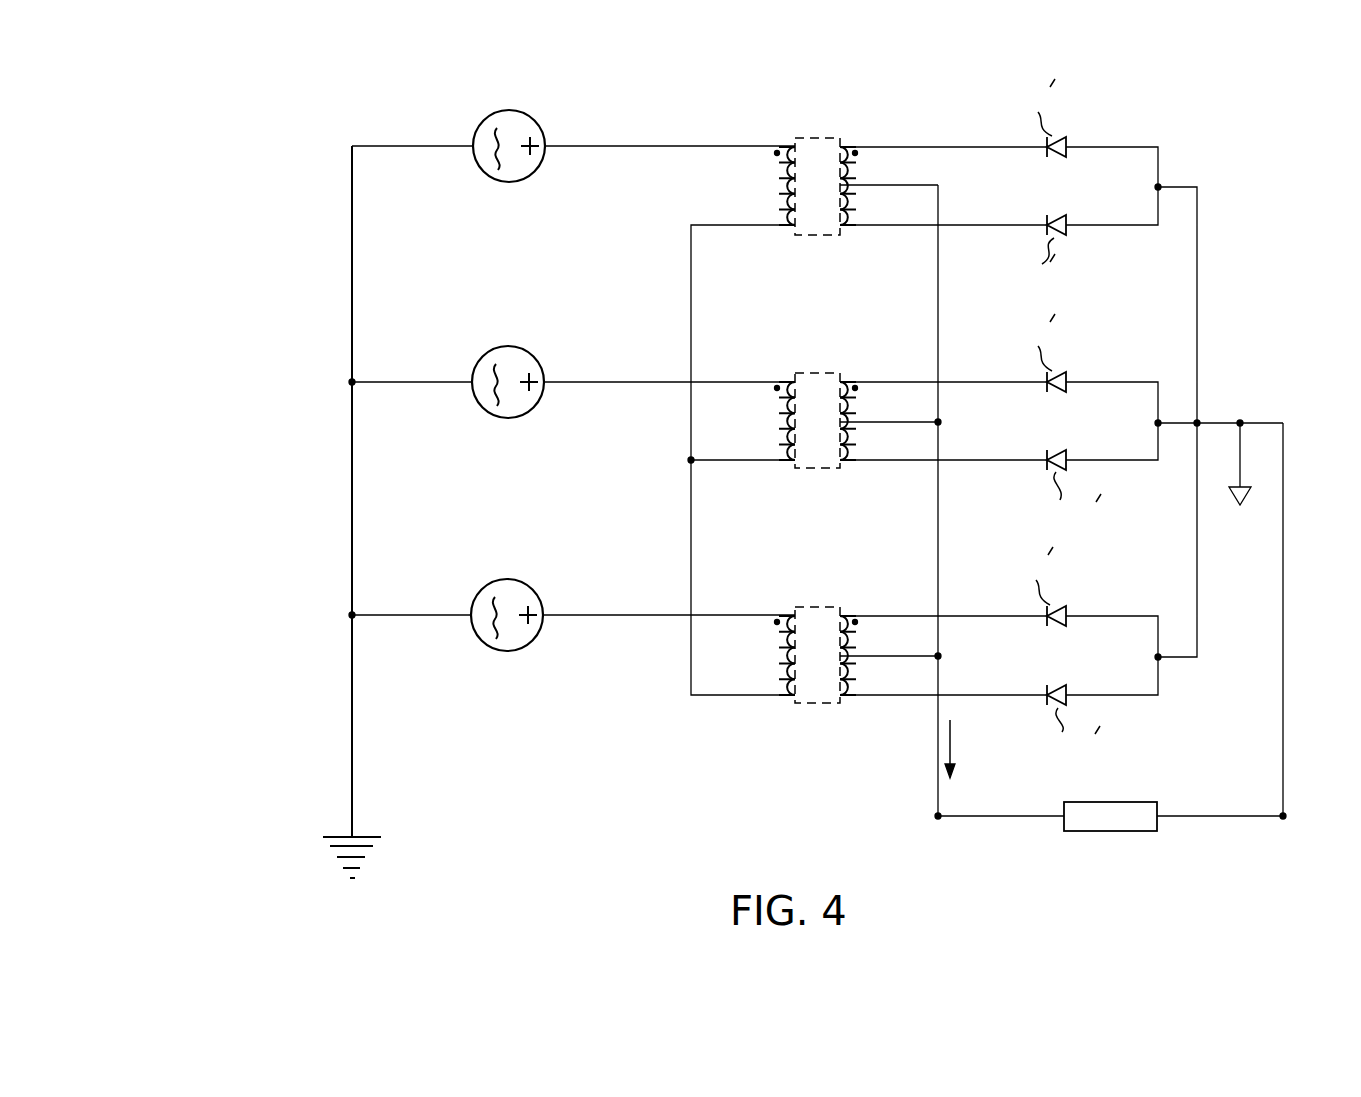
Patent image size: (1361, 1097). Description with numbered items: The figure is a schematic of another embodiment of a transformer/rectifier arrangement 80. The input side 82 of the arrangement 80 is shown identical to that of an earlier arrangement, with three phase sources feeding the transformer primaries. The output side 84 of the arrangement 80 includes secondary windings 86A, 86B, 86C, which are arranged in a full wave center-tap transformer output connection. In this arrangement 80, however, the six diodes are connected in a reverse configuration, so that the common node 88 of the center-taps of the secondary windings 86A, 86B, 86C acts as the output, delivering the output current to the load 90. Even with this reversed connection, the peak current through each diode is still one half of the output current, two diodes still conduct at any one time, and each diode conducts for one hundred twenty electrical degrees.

The transformer/rectifier arrangement 80 is at (484, 472).
The input side 82 is at (744, 479).
The output side 84 is at (1058, 475).
The secondary winding 86A is at (943, 186).
The secondary winding 86B is at (943, 421).
The secondary winding 86C is at (943, 655).
The common node 88 is at (940, 814).
The load 90 is at (1124, 832).